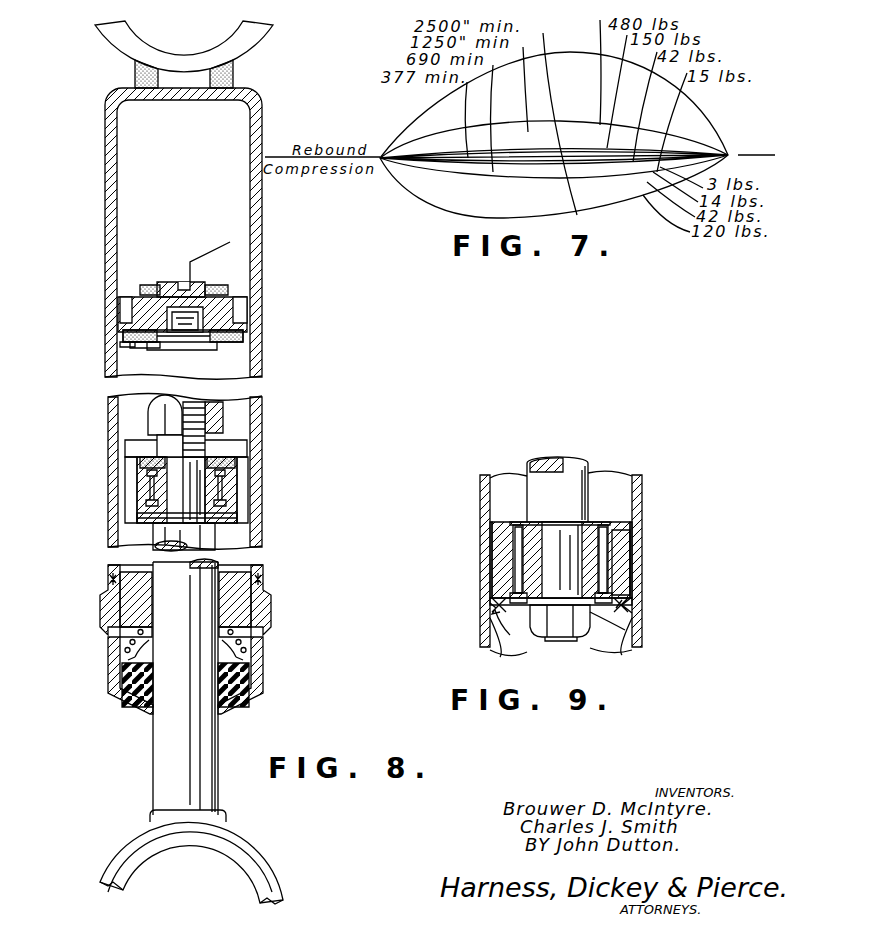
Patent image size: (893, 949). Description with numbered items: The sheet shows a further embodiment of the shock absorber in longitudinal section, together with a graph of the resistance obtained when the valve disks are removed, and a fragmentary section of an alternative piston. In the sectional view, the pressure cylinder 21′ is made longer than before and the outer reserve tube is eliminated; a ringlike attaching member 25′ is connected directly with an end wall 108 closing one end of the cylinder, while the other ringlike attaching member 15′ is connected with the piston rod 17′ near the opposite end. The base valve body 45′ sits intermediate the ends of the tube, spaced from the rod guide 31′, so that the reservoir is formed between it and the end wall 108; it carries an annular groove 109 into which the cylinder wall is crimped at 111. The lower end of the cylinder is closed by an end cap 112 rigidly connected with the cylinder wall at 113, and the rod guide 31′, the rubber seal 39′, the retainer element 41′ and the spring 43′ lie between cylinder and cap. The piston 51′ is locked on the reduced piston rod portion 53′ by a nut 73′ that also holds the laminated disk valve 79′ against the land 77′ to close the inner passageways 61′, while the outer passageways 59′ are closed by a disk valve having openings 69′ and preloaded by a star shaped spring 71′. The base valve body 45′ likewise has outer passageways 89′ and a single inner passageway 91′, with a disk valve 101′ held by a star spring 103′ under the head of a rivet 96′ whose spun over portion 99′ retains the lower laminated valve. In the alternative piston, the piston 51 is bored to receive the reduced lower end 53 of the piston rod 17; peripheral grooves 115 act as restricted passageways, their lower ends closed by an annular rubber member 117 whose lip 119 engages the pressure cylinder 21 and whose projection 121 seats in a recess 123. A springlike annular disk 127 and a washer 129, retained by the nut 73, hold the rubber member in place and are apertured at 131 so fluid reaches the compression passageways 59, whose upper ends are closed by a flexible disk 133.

In FIG. 8, the ringlike attaching member 15′ is at (124, 853).
In FIG. 8, the piston rod 17′ is at (210, 605).
In FIG. 8, the pressure cylinder 21′ is at (253, 500).
In FIG. 8, the ringlike attaching member 25′ is at (262, 40).
In FIG. 8, the rod guide 31′ is at (255, 578).
In FIG. 8, the seal 39′ is at (124, 685).
In FIG. 8, the retainer element 41′ is at (125, 655).
In FIG. 8, the spring 43′ is at (255, 640).
In FIG. 8, the base valve body 45′ is at (250, 302).
In FIG. 8, the piston 51′ is at (240, 465).
In FIG. 8, the reduced piston rod portion 53′ is at (210, 452).
In FIG. 8, the outer set of passageways 59′ is at (237, 480).
In FIG. 8, the inner passageways 61′ is at (150, 488).
In FIG. 8, the openings 69′ is at (137, 512).
In FIG. 8, the star shaped spring 71′ is at (153, 540).
In FIG. 8, the nut 73′ is at (223, 420).
In FIG. 8, the land 77′ is at (210, 258).
In FIG. 8, the laminated disk valve 79′ is at (183, 465).
In FIG. 8, the base valve outer passageways 89′ is at (255, 315).
In FIG. 8, the base valve inner passageway 91′ is at (148, 287).
In FIG. 8, the rivet 96′ is at (177, 346).
In FIG. 8, the spun over portion 99′ is at (166, 282).
In FIG. 8, the disk valve 101′ is at (130, 345).
In FIG. 8, the star spring 103′ is at (140, 348).
In FIG. 8, the end wall 108 is at (235, 84).
In FIG. 8, the annular groove 109 is at (123, 335).
In FIG. 8, the crimp 111 is at (116, 310).
In FIG. 8, the end cap 112 is at (112, 700).
In FIG. 8, the rigid connection 113 is at (103, 583).
In FIG. 9, the piston rod 17 is at (585, 470).
In FIG. 9, the pressure cylinder 21 is at (642, 637).
In FIG. 9, the piston 51 is at (622, 540).
In FIG. 9, the reduced lower end of piston rod 53 is at (580, 540).
In FIG. 9, the compression passageways 59 is at (560, 530).
In FIG. 9, the nut 73 is at (590, 640).
In FIG. 9, the grooves 115 is at (490, 552).
In FIG. 9, the annular rubber member 117 is at (490, 610).
In FIG. 9, the annular lip 119 is at (495, 612).
In FIG. 9, the annular projection 121 is at (495, 601).
In FIG. 9, the recess 123 is at (625, 602).
In FIG. 9, the springlike annular disk 127 is at (490, 640).
In FIG. 9, the washer 129 is at (500, 655).
In FIG. 9, the apertures 131 is at (520, 598).
In FIG. 9, the flexible disk 133 is at (519, 550).